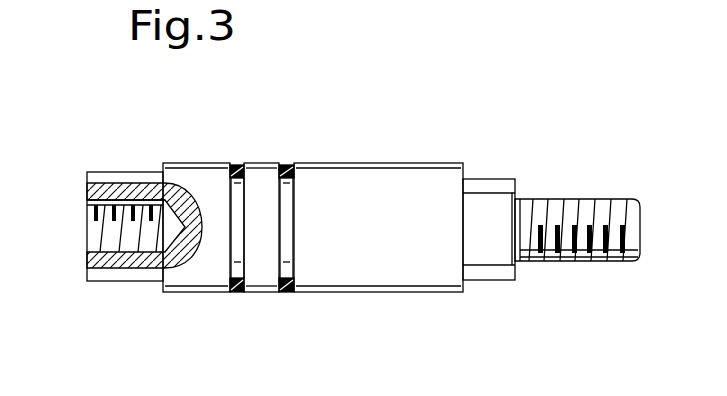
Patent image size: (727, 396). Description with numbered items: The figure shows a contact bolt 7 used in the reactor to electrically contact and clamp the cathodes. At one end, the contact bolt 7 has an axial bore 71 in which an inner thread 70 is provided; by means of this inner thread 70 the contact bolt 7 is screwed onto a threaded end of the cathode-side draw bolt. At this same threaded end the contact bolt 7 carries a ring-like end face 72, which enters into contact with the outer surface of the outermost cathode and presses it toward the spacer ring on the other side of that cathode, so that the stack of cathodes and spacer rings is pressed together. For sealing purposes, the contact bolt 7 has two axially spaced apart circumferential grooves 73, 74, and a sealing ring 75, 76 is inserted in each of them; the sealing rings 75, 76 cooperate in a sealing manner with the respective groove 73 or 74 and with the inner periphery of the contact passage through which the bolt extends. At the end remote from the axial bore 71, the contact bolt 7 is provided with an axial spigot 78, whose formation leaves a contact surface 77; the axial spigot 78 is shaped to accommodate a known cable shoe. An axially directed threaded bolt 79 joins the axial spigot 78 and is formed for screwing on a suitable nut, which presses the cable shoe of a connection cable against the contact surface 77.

The contact bolt 7 is at (399, 146).
The inner thread 70 is at (96, 215).
The axial bore 71 is at (97, 237).
The ring-like end face 72 is at (88, 190).
The circumferential groove 73 is at (236, 248).
The circumferential groove 74 is at (290, 248).
The sealing ring 75 is at (238, 165).
The sealing ring 76 is at (287, 165).
The contact surface 77 is at (467, 173).
The axial spigot 78 is at (493, 206).
The threaded bolt 79 is at (603, 205).